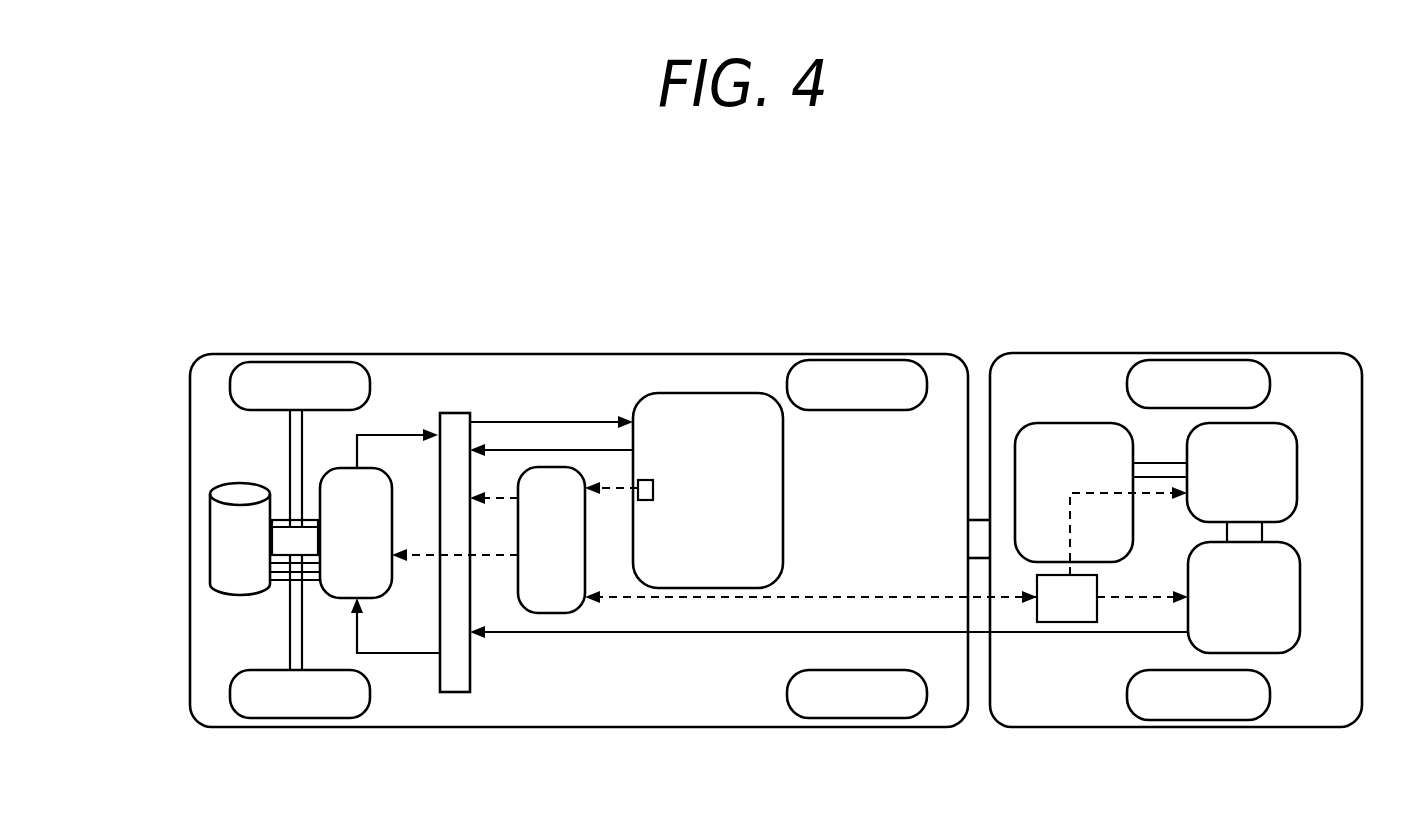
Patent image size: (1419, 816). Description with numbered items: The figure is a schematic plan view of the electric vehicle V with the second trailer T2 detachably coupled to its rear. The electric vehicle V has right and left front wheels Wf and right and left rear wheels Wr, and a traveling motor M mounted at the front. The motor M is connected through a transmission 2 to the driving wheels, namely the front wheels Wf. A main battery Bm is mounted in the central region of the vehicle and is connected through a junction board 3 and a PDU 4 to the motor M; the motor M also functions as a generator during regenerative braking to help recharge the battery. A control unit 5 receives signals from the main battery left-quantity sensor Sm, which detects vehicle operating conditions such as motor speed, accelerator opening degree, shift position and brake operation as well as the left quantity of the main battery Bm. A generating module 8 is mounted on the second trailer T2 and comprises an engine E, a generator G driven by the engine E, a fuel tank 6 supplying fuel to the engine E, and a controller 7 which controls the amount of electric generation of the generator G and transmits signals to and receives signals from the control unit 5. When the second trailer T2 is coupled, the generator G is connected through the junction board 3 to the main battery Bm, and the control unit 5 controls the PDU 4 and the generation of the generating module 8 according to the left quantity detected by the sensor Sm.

The transmission 2 is at (282, 535).
The junction board 3 is at (457, 420).
The PDU (power drive unit) 4 is at (356, 533).
The control unit 5 is at (551, 540).
The fuel tank 6 is at (1074, 492).
The controller 7 is at (1067, 598).
The generating module 8 is at (1214, 517).
The electric vehicle V is at (549, 340).
The second trailer T2 is at (1102, 340).
The front wheels Wf is at (277, 375).
The rear wheels Wr is at (845, 373).
The traveling motor M is at (240, 539).
The engine E is at (1242, 472).
The generator G is at (1244, 597).
The main battery left-quantity sensor Sm is at (653, 488).
The main battery Bm is at (708, 490).